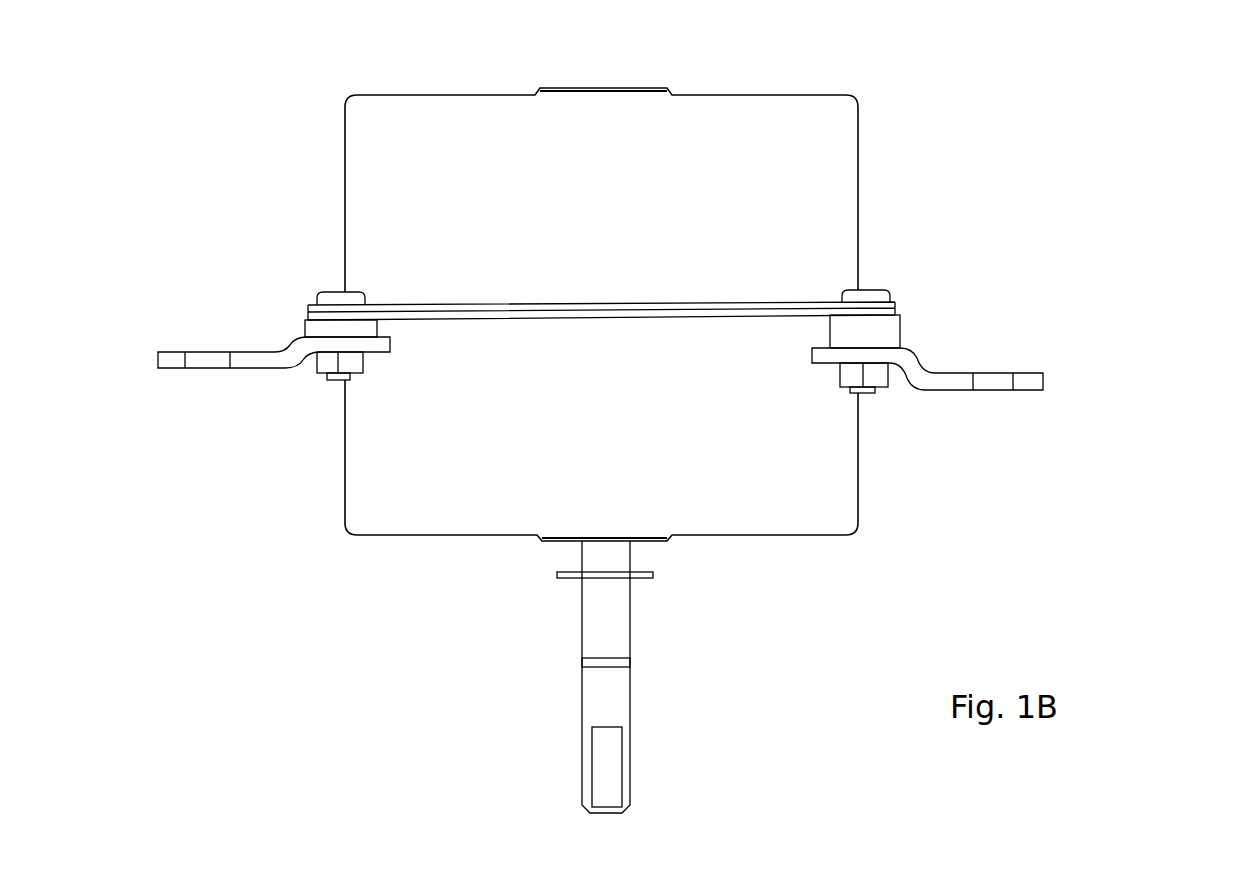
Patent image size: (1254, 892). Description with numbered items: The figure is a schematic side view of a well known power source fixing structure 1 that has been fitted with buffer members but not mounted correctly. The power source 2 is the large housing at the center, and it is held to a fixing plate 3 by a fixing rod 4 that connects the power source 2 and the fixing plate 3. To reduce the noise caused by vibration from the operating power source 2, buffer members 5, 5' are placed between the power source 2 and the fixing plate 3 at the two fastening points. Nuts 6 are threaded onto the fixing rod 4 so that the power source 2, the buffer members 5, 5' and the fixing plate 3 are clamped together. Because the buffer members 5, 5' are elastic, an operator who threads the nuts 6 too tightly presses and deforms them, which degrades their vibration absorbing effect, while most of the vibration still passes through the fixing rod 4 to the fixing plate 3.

The power source fixing structure 1 is at (774, 314).
The power source 2 is at (832, 228).
The fixing plate 3 is at (947, 377).
The fixing rod 4 is at (820, 482).
The buffer member 5 is at (272, 292).
The buffer member 5' is at (748, 339).
The nut 6 is at (325, 360).